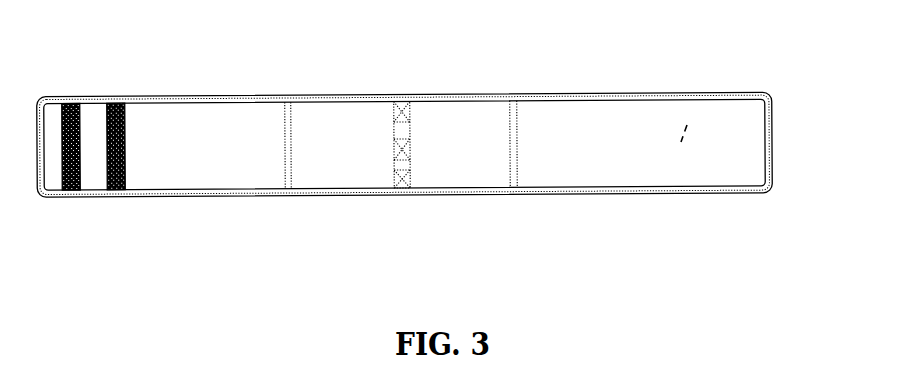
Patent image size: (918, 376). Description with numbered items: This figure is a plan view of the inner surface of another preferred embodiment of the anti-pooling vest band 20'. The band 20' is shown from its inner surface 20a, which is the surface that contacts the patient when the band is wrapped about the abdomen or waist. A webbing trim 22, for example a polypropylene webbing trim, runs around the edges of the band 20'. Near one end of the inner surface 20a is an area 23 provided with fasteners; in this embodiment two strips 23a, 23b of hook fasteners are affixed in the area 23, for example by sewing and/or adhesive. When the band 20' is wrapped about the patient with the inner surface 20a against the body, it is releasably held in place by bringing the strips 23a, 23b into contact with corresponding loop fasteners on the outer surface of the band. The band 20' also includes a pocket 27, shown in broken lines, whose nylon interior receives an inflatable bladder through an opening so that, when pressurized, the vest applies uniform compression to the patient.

The band 20' is at (405, 106).
The inner surface 20a is at (456, 172).
The webbing trim 22 is at (235, 97).
The area 23 is at (116, 182).
The strip 23a is at (108, 185).
The strip 23b is at (69, 186).
The pocket 27 is at (687, 125).